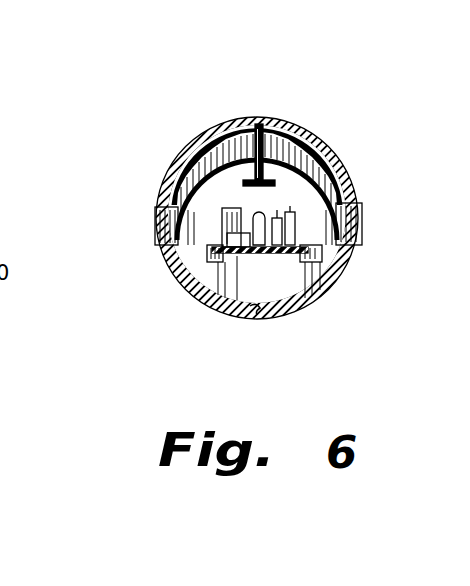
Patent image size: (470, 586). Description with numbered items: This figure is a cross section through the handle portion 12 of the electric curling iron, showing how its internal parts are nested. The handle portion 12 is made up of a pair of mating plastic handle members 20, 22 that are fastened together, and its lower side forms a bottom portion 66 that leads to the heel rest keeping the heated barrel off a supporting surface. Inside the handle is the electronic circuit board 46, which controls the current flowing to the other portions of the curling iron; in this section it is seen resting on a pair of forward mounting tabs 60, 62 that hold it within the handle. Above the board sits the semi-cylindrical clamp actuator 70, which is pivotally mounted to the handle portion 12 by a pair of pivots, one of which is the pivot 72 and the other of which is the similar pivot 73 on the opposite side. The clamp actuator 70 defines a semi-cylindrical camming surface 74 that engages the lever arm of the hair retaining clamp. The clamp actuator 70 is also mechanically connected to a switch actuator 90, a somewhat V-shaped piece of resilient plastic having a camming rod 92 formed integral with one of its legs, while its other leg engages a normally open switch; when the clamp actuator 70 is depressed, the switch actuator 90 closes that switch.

The handle portion 12 is at (213, 319).
The handle member 20 is at (190, 268).
The handle member 22 is at (312, 255).
The electronic circuit board 46 is at (288, 259).
The forward mounting tab 60 is at (200, 276).
The forward mounting tab 62 is at (330, 260).
The bottom portion 66 is at (258, 322).
The clamp actuator 70 is at (298, 144).
The pivot 72 is at (158, 212).
The right side boss 73 is at (352, 213).
The semi-cylindrical camming surface 74 is at (300, 140).
The switch actuator 90 is at (256, 187).
The camming rod 92 is at (253, 126).